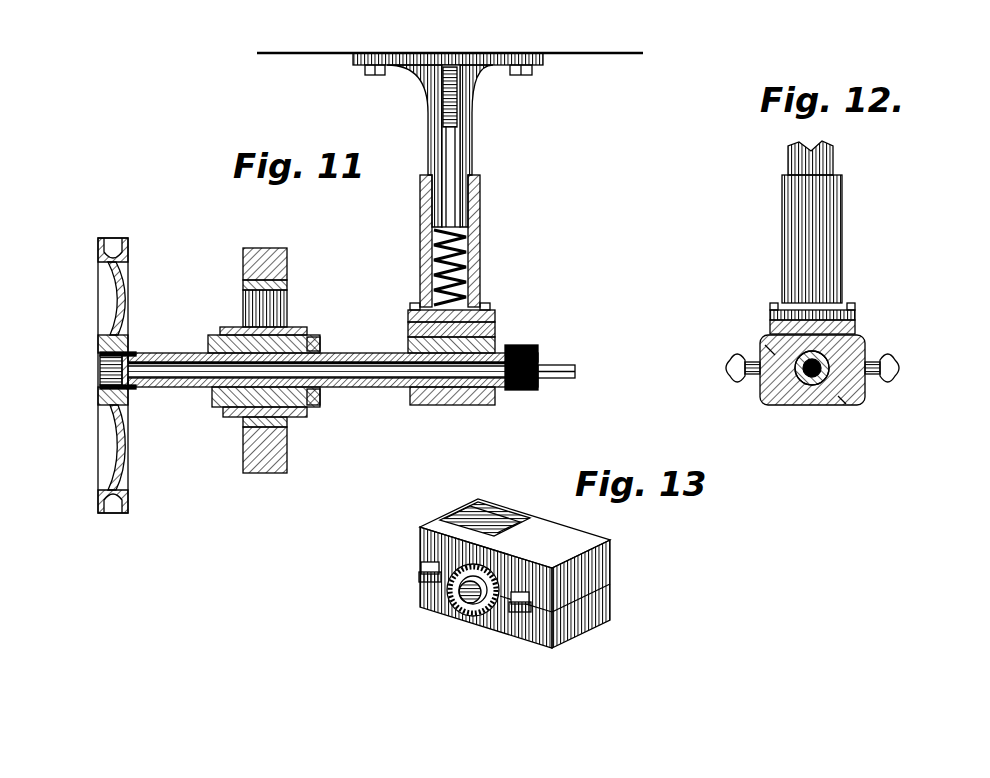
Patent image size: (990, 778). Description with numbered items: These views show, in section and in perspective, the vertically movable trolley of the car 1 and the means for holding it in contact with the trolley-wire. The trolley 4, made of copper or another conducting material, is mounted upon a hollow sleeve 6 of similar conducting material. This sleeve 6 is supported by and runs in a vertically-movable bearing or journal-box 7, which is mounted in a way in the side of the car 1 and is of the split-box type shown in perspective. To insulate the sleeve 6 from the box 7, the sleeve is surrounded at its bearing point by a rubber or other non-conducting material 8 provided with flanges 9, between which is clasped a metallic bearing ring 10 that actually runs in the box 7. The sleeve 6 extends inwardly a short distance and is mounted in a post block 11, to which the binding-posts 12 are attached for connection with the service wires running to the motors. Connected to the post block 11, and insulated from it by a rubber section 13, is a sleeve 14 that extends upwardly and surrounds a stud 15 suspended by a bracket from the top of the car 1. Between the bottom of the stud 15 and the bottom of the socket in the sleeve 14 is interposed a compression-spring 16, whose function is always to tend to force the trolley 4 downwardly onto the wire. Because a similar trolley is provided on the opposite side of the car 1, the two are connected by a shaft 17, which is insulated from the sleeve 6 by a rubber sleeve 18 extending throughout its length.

In FIG. 13, the car 1 is at (493, 530).
In FIG. 11, the trolley 4 is at (106, 308).
In FIG. 11, the hollow sleeve 6 is at (171, 385).
In FIG. 12, the hollow sleeve 6 is at (772, 345).
In FIG. 11, the journal-box 7 is at (307, 417).
In FIG. 11, the non-conducting material 8 is at (271, 307).
In FIG. 11, the flanges 9 is at (322, 344).
In FIG. 13, the flanges 9 is at (472, 620).
In FIG. 11, the metallic bearing ring 10 is at (218, 334).
In FIG. 13, the metallic bearing ring 10 is at (530, 556).
In FIG. 11, the post block 11 is at (463, 403).
In FIG. 12, the post block 11 is at (813, 406).
In FIG. 12, the binding-posts 12 is at (737, 386).
In FIG. 12, the rubber section 13 is at (856, 333).
In FIG. 11, the sleeve 14 is at (480, 234).
In FIG. 12, the sleeve 14 is at (830, 270).
In FIG. 11, the stud 15 is at (455, 162).
In FIG. 12, the stud 15 is at (834, 161).
In FIG. 11, the compression-spring 16 is at (473, 280).
In FIG. 11, the shaft 17 is at (566, 362).
In FIG. 12, the shaft 17 is at (845, 404).
In FIG. 11, the rubber sleeve 18 is at (531, 393).
In FIG. 12, the rubber sleeve 18 is at (740, 346).